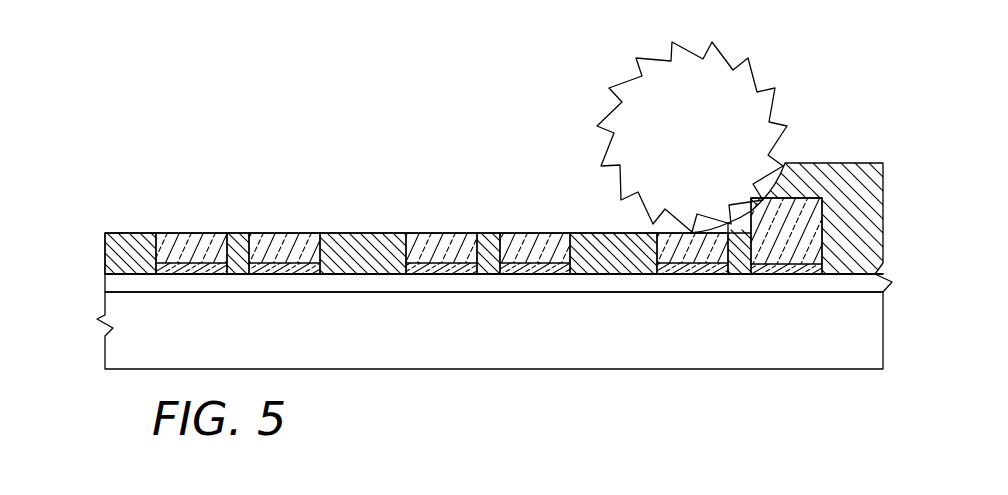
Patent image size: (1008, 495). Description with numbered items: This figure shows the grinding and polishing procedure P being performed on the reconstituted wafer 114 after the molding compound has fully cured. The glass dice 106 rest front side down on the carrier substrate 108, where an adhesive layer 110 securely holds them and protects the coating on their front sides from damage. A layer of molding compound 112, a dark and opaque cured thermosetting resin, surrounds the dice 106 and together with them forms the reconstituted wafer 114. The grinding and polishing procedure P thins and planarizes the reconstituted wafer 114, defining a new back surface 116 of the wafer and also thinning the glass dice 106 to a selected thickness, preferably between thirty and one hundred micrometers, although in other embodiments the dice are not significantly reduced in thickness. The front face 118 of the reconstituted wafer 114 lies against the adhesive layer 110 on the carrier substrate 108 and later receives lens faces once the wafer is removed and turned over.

The die 106 is at (183, 233).
The carrier substrate 108 is at (783, 357).
The adhesive layer 110 is at (627, 285).
The molding compound layer 112 is at (840, 163).
The reconstituted wafer 114 is at (303, 120).
The back surface 116 is at (323, 233).
The front face 118 is at (491, 274).
The grinding and polishing procedure P is at (592, 100).